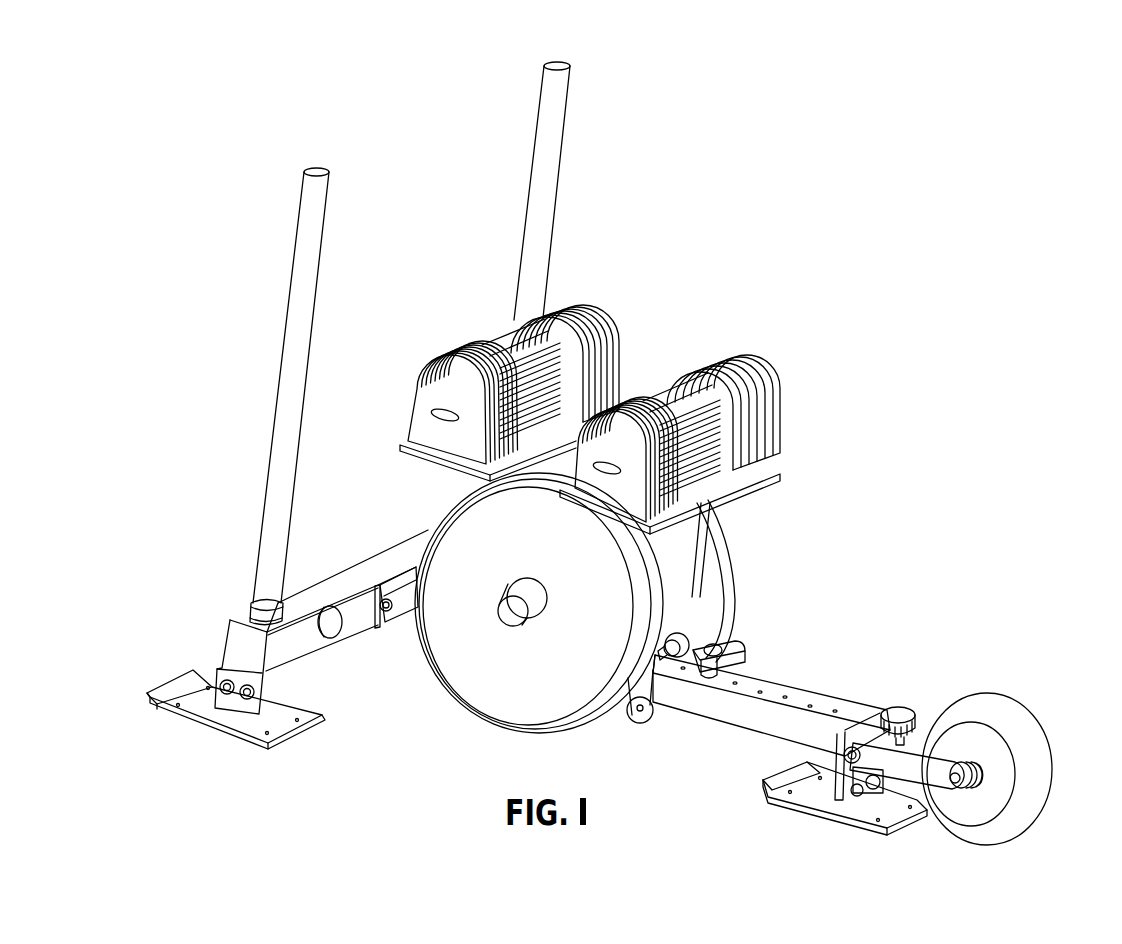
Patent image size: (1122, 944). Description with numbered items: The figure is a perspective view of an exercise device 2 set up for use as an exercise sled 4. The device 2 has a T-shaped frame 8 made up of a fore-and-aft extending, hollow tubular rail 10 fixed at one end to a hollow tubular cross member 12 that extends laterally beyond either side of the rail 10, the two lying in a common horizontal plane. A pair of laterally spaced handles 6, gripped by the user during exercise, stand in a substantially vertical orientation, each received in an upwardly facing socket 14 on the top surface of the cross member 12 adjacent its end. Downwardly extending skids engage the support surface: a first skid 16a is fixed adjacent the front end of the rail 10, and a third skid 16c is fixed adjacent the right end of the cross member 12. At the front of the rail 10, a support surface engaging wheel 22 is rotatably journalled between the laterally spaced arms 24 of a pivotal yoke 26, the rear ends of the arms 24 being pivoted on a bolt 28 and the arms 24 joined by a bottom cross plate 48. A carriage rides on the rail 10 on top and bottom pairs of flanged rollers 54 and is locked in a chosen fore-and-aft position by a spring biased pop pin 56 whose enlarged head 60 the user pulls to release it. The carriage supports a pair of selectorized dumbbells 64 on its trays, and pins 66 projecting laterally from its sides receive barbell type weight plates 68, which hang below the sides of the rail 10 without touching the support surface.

The exercise device 2 is at (714, 270).
The exercise sled 4 is at (810, 680).
The handles 6 is at (300, 270).
The T-shaped frame 8 is at (386, 634).
The rail 10 is at (828, 710).
The cross member 12 is at (355, 578).
The socket 14 is at (253, 610).
The first skid 16a is at (760, 803).
The third skid 16c is at (208, 740).
The wheel 22 is at (1003, 708).
The arms 24 is at (950, 762).
The yoke 26 is at (920, 748).
The bolt 28 is at (882, 712).
The cross plate 48 is at (850, 773).
The flanged rollers 54 is at (653, 705).
The pop pin 56 is at (710, 677).
The enlarged head 60 is at (718, 643).
The selectorized dumbbells 64 is at (597, 317).
The pins 66 is at (525, 610).
The weight plates 68 is at (660, 590).